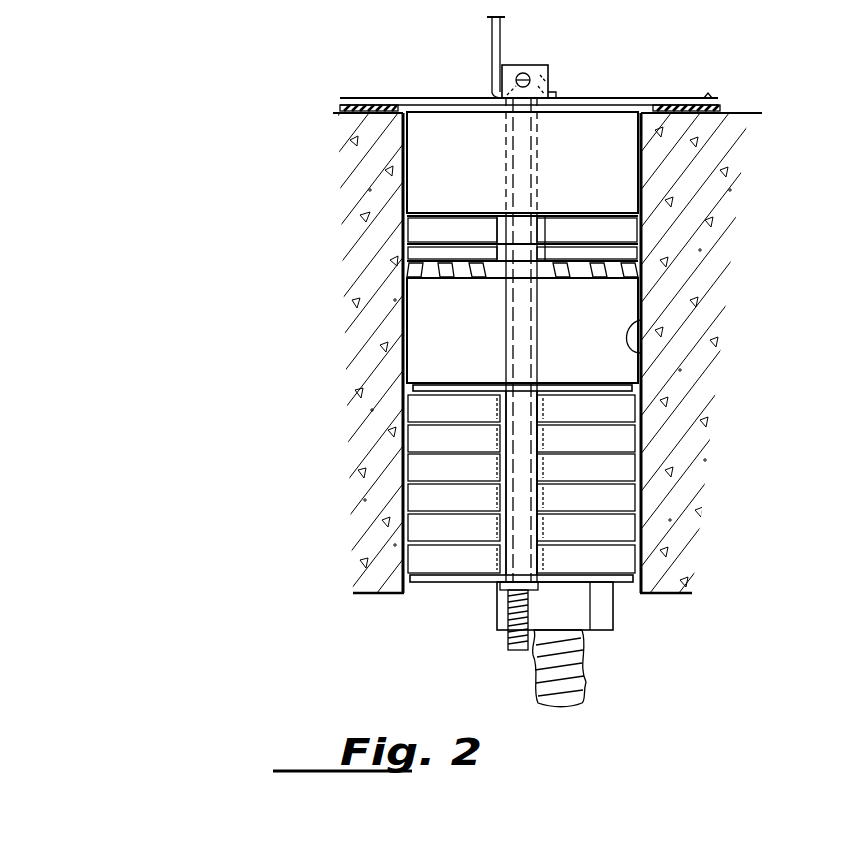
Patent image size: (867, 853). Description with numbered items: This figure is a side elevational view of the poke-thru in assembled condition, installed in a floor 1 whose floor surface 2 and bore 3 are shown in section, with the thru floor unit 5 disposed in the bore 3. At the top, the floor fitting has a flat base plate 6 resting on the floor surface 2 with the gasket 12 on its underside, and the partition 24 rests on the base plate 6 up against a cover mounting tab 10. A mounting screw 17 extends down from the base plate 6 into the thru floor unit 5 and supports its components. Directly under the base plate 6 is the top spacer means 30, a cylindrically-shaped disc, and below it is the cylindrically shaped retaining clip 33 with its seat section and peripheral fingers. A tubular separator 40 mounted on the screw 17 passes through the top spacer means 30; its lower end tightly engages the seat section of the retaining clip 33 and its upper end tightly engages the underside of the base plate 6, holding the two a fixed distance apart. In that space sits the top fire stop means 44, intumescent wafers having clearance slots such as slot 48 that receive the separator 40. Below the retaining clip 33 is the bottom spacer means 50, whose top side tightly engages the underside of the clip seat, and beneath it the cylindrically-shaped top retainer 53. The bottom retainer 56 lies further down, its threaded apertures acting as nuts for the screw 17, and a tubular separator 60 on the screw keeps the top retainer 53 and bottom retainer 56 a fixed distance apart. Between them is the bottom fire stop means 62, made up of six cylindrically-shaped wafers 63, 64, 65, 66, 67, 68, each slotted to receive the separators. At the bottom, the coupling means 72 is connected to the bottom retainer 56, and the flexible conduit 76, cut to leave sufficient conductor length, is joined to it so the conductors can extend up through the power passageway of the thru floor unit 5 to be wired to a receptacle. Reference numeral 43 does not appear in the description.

The floor 1 is at (720, 266).
The floor surface 2 is at (735, 112).
The bore 3 is at (645, 352).
The thru floor unit 5 is at (662, 381).
The base plate 6 is at (372, 99).
The cover mounting tab 10 is at (510, 70).
The gasket 12 is at (340, 107).
The mounting screw 17 is at (553, 78).
The partition 24 is at (495, 38).
The top spacer means 30 is at (425, 157).
The retaining clip 33 is at (430, 270).
The tubular separator 40 is at (584, 129).
The inner conductor 43 is at (540, 201).
The top fire stop means 44 is at (420, 227).
The clearance slot 48 is at (497, 230).
The bottom spacer means 50 is at (430, 343).
The top retainer 53 is at (415, 390).
The bottom retainer 56 is at (402, 580).
The tubular separator 60 is at (520, 430).
The bottom fire stop means 62 is at (392, 487).
The wafer 63 is at (618, 410).
The wafer 64 is at (618, 441).
The wafer 65 is at (618, 470).
The wafer 66 is at (618, 500).
The wafer 67 is at (618, 530).
The wafer 68 is at (618, 567).
The coupling means 72 is at (500, 612).
The flexible conduit 76 is at (583, 660).